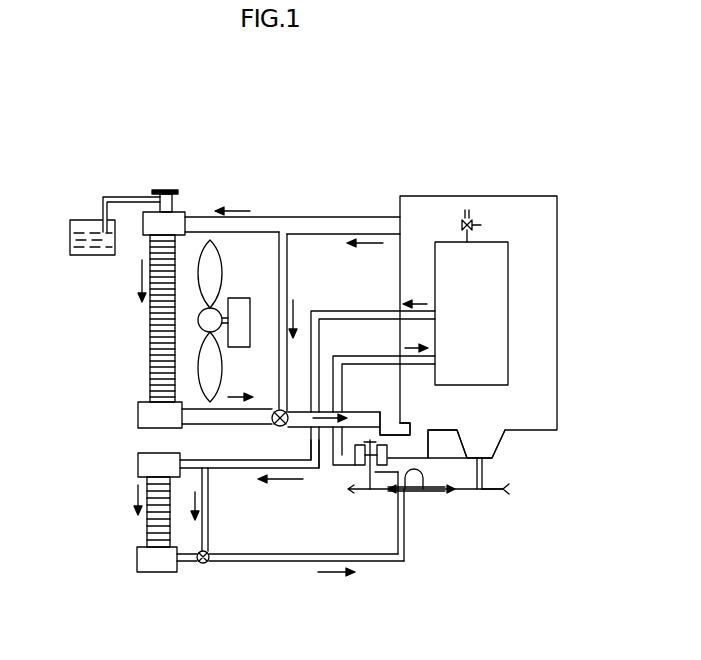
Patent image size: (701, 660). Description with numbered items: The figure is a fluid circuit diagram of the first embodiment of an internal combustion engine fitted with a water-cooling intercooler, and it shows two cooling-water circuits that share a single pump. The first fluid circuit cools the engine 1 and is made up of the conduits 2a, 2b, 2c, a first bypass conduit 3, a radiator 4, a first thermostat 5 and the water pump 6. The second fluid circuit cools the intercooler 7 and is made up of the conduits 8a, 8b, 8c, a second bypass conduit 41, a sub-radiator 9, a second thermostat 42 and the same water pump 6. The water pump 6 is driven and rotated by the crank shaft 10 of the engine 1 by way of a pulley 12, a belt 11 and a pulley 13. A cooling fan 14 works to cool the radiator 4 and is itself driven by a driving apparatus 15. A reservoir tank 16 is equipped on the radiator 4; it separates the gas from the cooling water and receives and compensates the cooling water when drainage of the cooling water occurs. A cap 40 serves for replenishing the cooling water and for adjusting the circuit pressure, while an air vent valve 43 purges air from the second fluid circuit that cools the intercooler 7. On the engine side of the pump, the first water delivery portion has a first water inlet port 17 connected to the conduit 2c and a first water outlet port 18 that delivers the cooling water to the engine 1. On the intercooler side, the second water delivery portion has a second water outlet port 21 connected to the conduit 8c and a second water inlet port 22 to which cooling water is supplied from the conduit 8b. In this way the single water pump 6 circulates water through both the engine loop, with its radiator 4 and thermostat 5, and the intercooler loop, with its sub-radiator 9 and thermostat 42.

The engine 1 is at (557, 272).
The conduit 2a is at (313, 217).
The conduit 2b is at (238, 424).
The conduit 2c is at (367, 411).
The first bypass conduit 3 is at (288, 278).
The radiator 4 is at (157, 326).
The first thermostat 5 is at (277, 428).
The water pump 6 is at (362, 472).
The intercooler 7 is at (492, 331).
The conduit 8a is at (238, 468).
The conduit 8b is at (245, 562).
The conduit 8c is at (373, 356).
The sub-radiator 9 is at (147, 525).
The crank shaft 10 is at (483, 472).
The belt 11 is at (433, 495).
The pulley 12 is at (495, 495).
The pulley 13 is at (362, 490).
The cooling fan 14 is at (213, 262).
The driving apparatus 15 is at (240, 312).
The reservoir tank 16 is at (70, 235).
The first water inlet port 17 is at (373, 432).
The first water outlet port 18 is at (427, 452).
The second water outlet port 21 is at (312, 471).
The second water inlet port 22 is at (422, 495).
The cap 40 is at (168, 190).
The second bypass conduit 41 is at (208, 527).
The second thermostat 42 is at (204, 563).
The air vent valve 43 is at (478, 218).